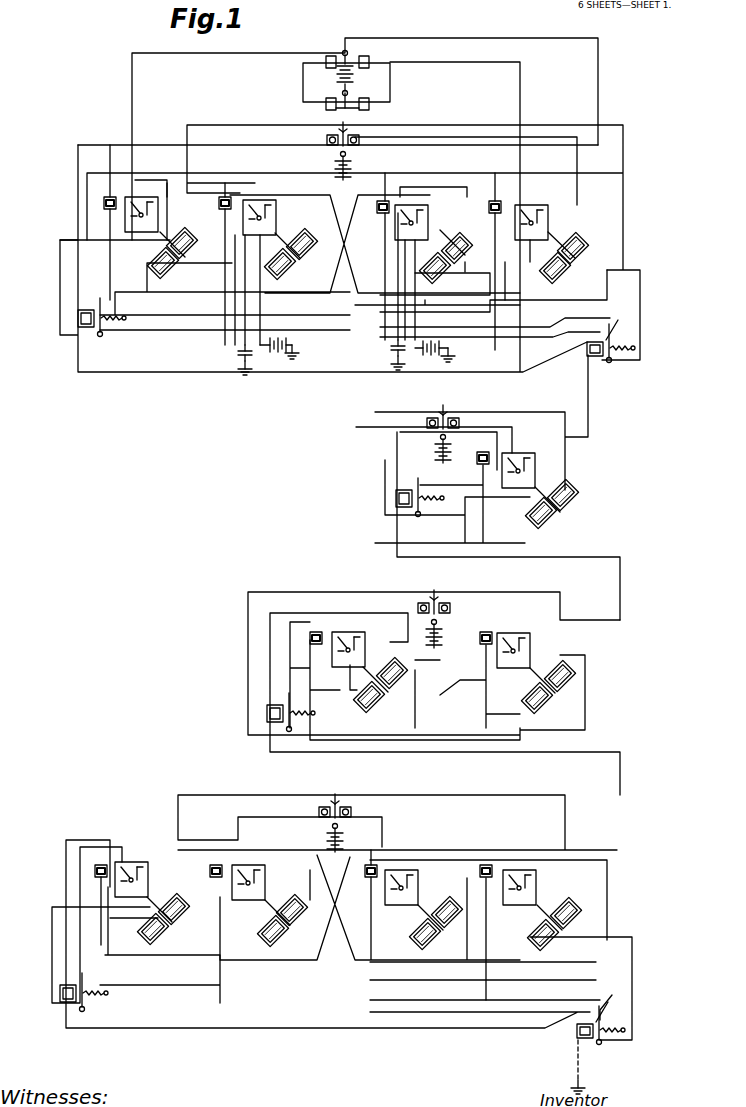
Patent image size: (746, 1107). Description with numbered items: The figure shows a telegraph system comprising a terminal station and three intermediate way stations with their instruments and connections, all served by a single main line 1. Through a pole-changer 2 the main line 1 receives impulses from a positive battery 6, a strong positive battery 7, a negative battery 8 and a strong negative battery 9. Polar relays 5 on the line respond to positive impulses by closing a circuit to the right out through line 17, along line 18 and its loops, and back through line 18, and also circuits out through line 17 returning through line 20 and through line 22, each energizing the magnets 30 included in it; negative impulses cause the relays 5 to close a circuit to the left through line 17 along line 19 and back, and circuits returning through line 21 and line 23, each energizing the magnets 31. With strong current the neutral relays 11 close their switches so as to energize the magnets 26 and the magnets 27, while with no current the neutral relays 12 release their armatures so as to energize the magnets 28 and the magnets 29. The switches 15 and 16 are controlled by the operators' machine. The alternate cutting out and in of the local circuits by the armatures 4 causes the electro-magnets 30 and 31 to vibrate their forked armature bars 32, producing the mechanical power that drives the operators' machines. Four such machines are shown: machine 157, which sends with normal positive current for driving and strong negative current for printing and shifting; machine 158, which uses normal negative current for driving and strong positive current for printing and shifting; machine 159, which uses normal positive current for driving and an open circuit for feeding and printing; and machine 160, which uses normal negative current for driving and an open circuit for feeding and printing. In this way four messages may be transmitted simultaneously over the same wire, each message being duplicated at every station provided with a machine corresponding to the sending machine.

The main line 1 is at (93, 150).
The pole-changer 2 is at (330, 54).
The armature 4 is at (414, 480).
The polar relay 5 is at (367, 480).
The positive battery 6 is at (239, 358).
The strong positive battery 7 is at (283, 348).
The negative battery 8 is at (391, 355).
The strong negative battery 9 is at (439, 351).
The neutral relay 11 is at (599, 707).
The neutral relay 12 is at (252, 653).
The switch 15 is at (330, 226).
The switch 16 is at (330, 559).
The line 17 is at (115, 918).
The line 18 is at (330, 124).
The line 19 is at (365, 126).
The line 20 is at (529, 542).
The line 21 is at (571, 460).
The line 22 is at (236, 648).
The line 23 is at (455, 591).
The magnet 26 is at (367, 546).
The magnet 27 is at (210, 538).
The magnet 28 is at (480, 539).
The magnet 29 is at (205, 528).
The magnet 30 is at (364, 588).
The magnet 31 is at (362, 589).
The forked armature bar 32 is at (357, 572).
The machine 157 is at (425, 210).
The machine 158 is at (275, 210).
The machine 159 is at (540, 210).
The machine 160 is at (150, 192).